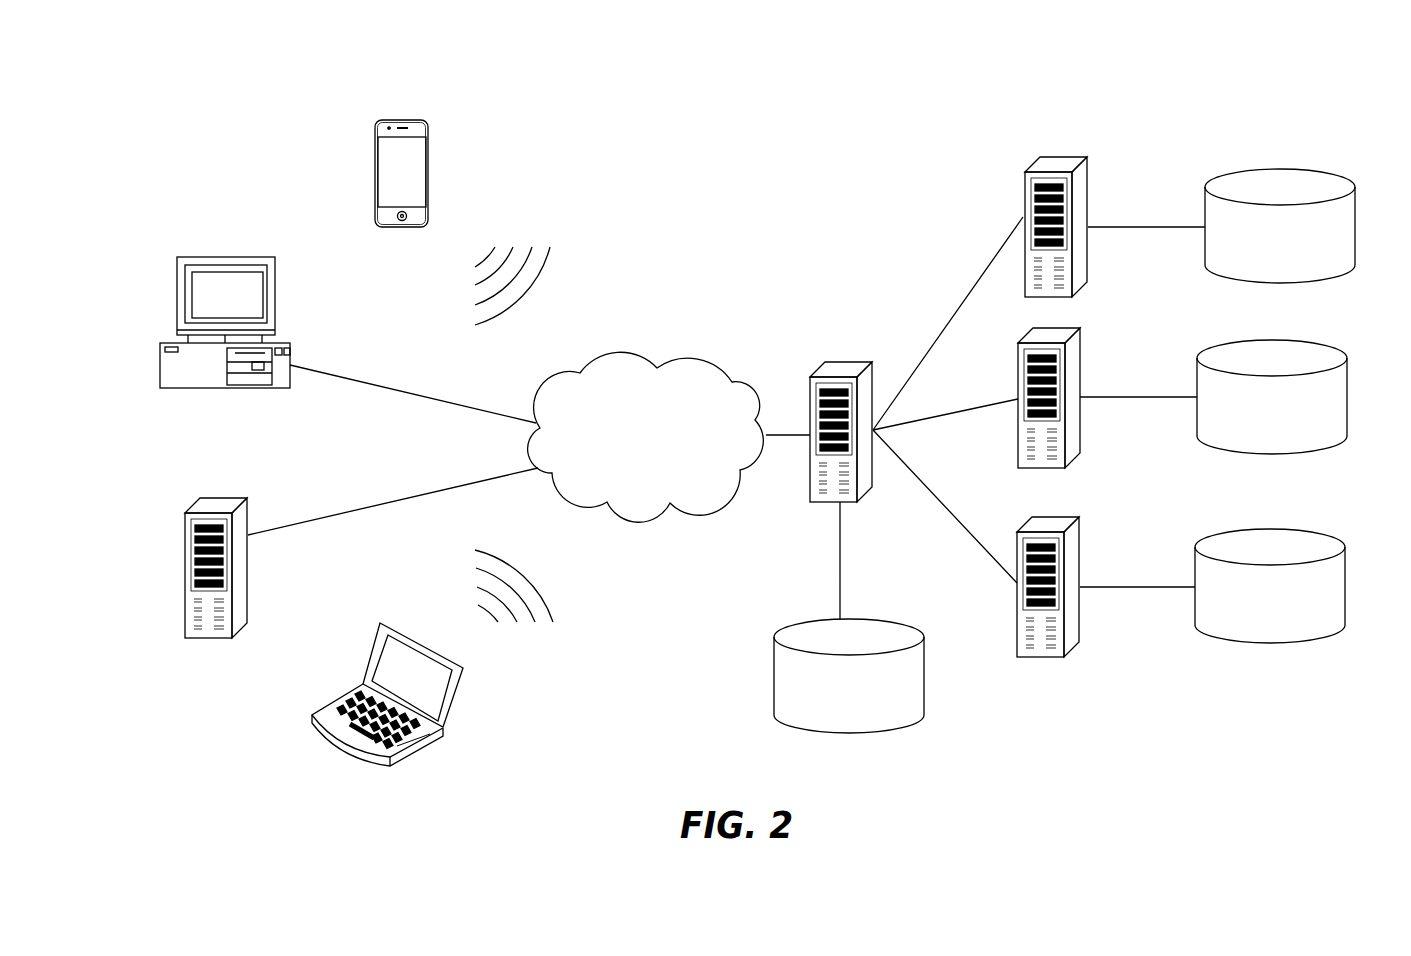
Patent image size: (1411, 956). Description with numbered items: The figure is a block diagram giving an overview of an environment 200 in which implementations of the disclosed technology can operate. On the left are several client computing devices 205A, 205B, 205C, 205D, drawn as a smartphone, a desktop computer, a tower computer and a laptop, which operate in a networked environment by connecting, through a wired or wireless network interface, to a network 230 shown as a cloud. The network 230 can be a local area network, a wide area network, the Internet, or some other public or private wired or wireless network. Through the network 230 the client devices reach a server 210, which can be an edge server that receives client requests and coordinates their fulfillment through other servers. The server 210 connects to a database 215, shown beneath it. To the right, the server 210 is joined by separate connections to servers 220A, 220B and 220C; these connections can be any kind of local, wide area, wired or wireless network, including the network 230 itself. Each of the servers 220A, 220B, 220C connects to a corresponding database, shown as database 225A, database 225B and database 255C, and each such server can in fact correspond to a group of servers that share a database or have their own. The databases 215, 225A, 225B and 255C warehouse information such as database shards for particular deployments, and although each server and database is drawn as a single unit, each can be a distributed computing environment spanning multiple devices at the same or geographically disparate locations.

The environment 200 is at (866, 128).
The client computing device 205A is at (415, 120).
The client computing device 205B is at (265, 257).
The client computing device 205C is at (238, 493).
The client computing device 205D is at (455, 700).
The network 230 is at (703, 354).
The server 210 is at (850, 361).
The database 215 is at (900, 621).
The server 220A is at (1087, 161).
The database 225A is at (1277, 170).
The server 220B is at (1078, 330).
The database 225B is at (1267, 340).
The server 220C is at (1078, 515).
The database 255C is at (1265, 528).